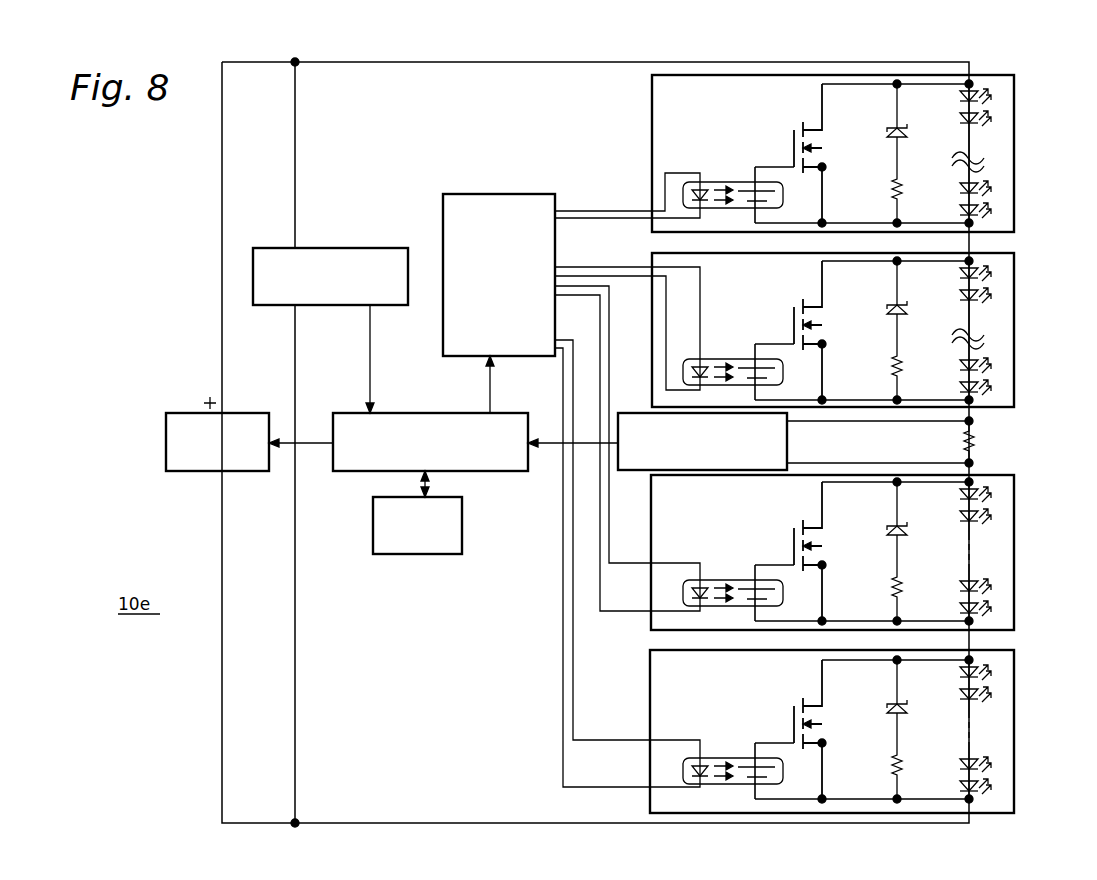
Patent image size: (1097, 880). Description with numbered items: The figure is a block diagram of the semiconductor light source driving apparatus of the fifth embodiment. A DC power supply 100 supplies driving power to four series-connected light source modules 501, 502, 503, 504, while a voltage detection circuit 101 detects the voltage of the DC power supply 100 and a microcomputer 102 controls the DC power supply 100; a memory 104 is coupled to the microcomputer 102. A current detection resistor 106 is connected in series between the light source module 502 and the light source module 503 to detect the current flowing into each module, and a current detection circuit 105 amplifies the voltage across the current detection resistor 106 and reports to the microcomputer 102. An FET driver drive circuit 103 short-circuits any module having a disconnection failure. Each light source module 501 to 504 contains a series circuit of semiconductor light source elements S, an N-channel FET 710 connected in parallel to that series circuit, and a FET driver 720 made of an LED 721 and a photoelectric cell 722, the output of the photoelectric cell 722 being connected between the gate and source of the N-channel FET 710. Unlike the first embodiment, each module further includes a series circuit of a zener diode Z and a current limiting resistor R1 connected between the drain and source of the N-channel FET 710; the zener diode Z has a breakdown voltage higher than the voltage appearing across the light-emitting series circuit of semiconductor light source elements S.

The DC power supply 100 is at (232, 413).
The voltage detection circuit 101 is at (335, 248).
The microcomputer 102 is at (400, 413).
The FET driver drive circuit 103 is at (498, 193).
The memory 104 is at (462, 537).
The current detection circuit 105 is at (787, 454).
The current detection resistor 106 is at (982, 443).
The light source module 501 is at (834, 151).
The light source module 502 is at (1015, 310).
The light source module 503 is at (1010, 552).
The light source module 504 is at (1010, 730).
The N-channel FET 710 is at (785, 153).
The FET driver 720 is at (730, 167).
The LED 721 is at (666, 166).
The photoelectric cell 722 is at (758, 177).
The zener diode Z is at (871, 130).
The current limiting resistor R1 is at (868, 187).
The semiconductor light source elements S is at (1005, 147).